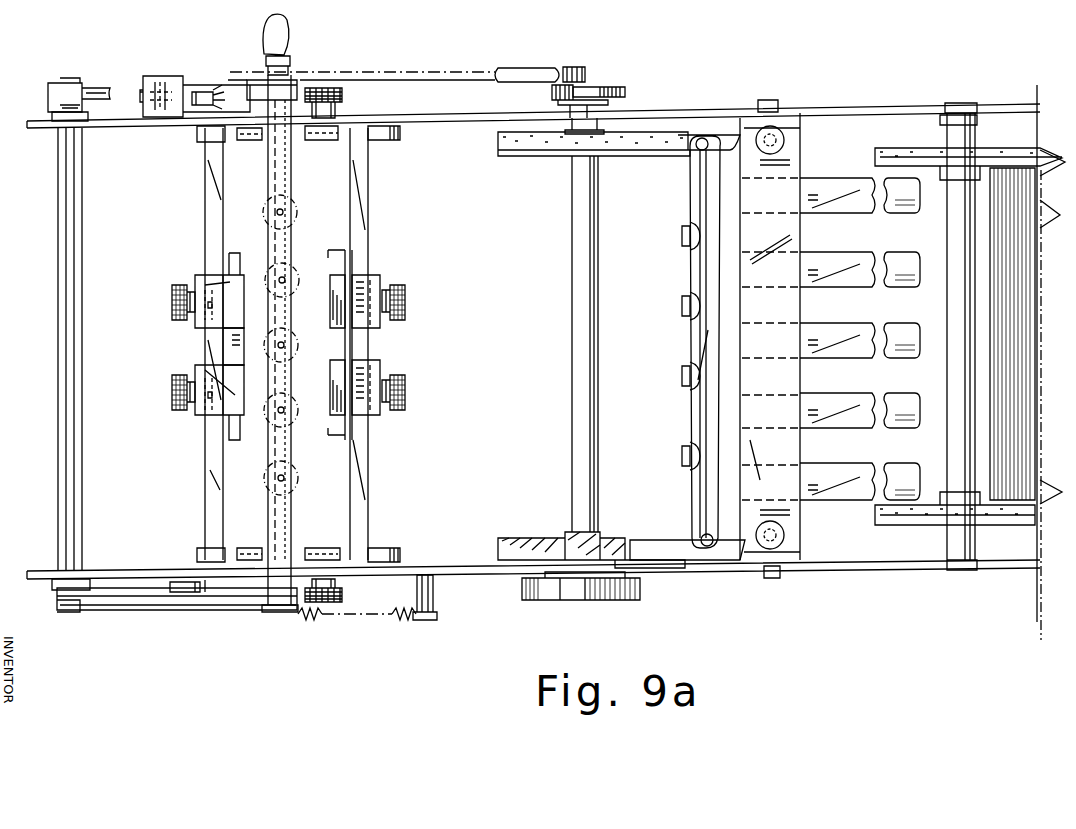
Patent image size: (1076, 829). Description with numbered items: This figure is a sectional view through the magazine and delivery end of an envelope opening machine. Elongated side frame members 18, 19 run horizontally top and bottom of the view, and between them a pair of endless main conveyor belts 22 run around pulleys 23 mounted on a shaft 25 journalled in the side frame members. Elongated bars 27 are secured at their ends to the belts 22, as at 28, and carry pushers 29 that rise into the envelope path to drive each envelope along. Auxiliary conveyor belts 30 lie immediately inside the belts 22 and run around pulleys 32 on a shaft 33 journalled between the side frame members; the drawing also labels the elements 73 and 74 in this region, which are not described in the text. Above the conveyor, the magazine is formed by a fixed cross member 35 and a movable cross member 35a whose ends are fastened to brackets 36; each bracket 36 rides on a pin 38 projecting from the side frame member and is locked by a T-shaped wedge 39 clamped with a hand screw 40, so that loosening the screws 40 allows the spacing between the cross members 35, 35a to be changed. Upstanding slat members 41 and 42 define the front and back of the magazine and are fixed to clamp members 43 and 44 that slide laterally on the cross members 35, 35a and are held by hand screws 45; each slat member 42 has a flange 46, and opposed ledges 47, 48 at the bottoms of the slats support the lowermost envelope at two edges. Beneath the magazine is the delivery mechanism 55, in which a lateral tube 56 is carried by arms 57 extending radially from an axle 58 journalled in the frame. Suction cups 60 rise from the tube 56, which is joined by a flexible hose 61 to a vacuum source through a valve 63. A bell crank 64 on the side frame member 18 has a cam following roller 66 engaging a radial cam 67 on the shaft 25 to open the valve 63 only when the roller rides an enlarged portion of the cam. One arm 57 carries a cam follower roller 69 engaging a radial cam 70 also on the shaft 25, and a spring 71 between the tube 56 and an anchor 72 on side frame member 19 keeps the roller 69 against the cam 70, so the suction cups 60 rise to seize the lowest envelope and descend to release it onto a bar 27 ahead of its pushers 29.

The side frame member 18 is at (684, 108).
The side frame member 19 is at (472, 545).
The main conveyor belt 22 is at (682, 148).
The pulley 23 is at (517, 154).
The shaft 25 is at (572, 330).
The elongated bar 27 is at (700, 268).
The securing point 28 is at (704, 138).
The pusher 29 is at (682, 236).
The auxiliary conveyor belt 30 is at (1022, 160).
The pulley 32 is at (885, 150).
The shaft 33 is at (958, 382).
The fixed cross member 35 is at (213, 208).
The movable cross member 35a is at (365, 466).
The bracket 36 is at (380, 138).
The pin 38 is at (252, 142).
The T-shaped wedge 39 is at (318, 143).
The hand screw 40 is at (343, 95).
The upstanding slat member 41 is at (237, 255).
The upstanding slat member 42 is at (352, 262).
The clamp member 43 is at (197, 278).
The clamp member 44 is at (380, 278).
The hand screw 45 is at (172, 305).
The flange 46 is at (340, 250).
The ledge 47 is at (240, 328).
The ledge 48 is at (338, 352).
The delivery mechanism 55 is at (238, 618).
The tube 56 is at (270, 188).
The arm 57 is at (98, 85).
The axle 58 is at (58, 350).
The suction cup 60 is at (297, 212).
The flexible hose 61 is at (272, 37).
The valve 63 is at (213, 95).
The bell crank 64 is at (202, 62).
The cam following roller 66 is at (552, 95).
The radial cam 67 is at (626, 92).
The cam follower roller 69 is at (207, 590).
The radial cam 70 is at (575, 592).
The spring 71 is at (312, 622).
The anchor 72 is at (435, 590).
The slot 73 is at (843, 165).
The plate 74 is at (760, 231).